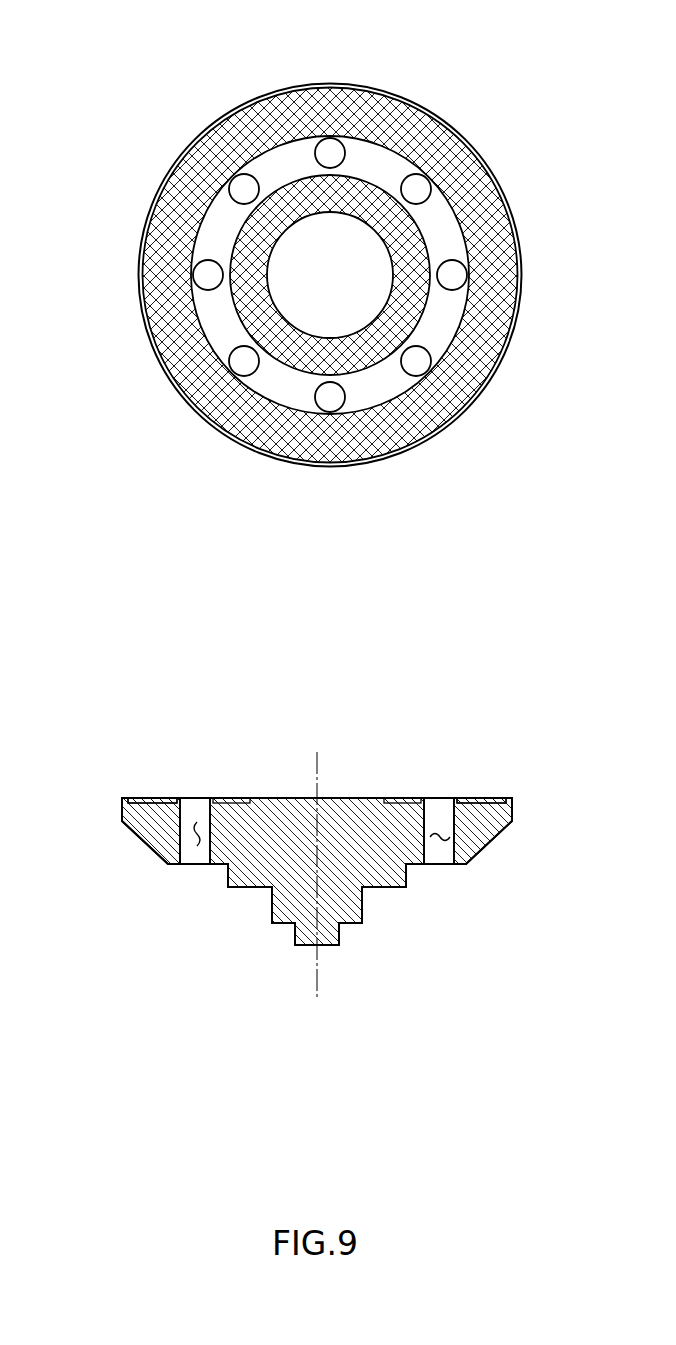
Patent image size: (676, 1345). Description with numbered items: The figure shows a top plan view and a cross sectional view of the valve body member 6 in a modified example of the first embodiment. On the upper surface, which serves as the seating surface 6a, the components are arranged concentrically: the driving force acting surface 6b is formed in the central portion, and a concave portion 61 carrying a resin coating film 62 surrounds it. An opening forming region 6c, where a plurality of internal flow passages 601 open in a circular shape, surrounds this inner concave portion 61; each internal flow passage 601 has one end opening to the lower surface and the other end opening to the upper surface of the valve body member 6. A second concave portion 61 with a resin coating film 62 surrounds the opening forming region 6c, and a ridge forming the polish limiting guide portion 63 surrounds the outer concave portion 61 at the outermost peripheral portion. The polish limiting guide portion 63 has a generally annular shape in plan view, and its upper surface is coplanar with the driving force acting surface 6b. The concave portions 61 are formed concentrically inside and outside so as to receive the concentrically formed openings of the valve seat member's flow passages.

The valve body member 6 is at (132, 76).
The seating surface 6a is at (317, 800).
The driving force acting surface 6b is at (343, 284).
The opening forming region 6c is at (217, 322).
The concave portion 61 is at (415, 223).
The resin coating film 62 is at (335, 98).
The polish limiting guide portion 63 is at (138, 242).
The internal flow passage 601 is at (198, 832).